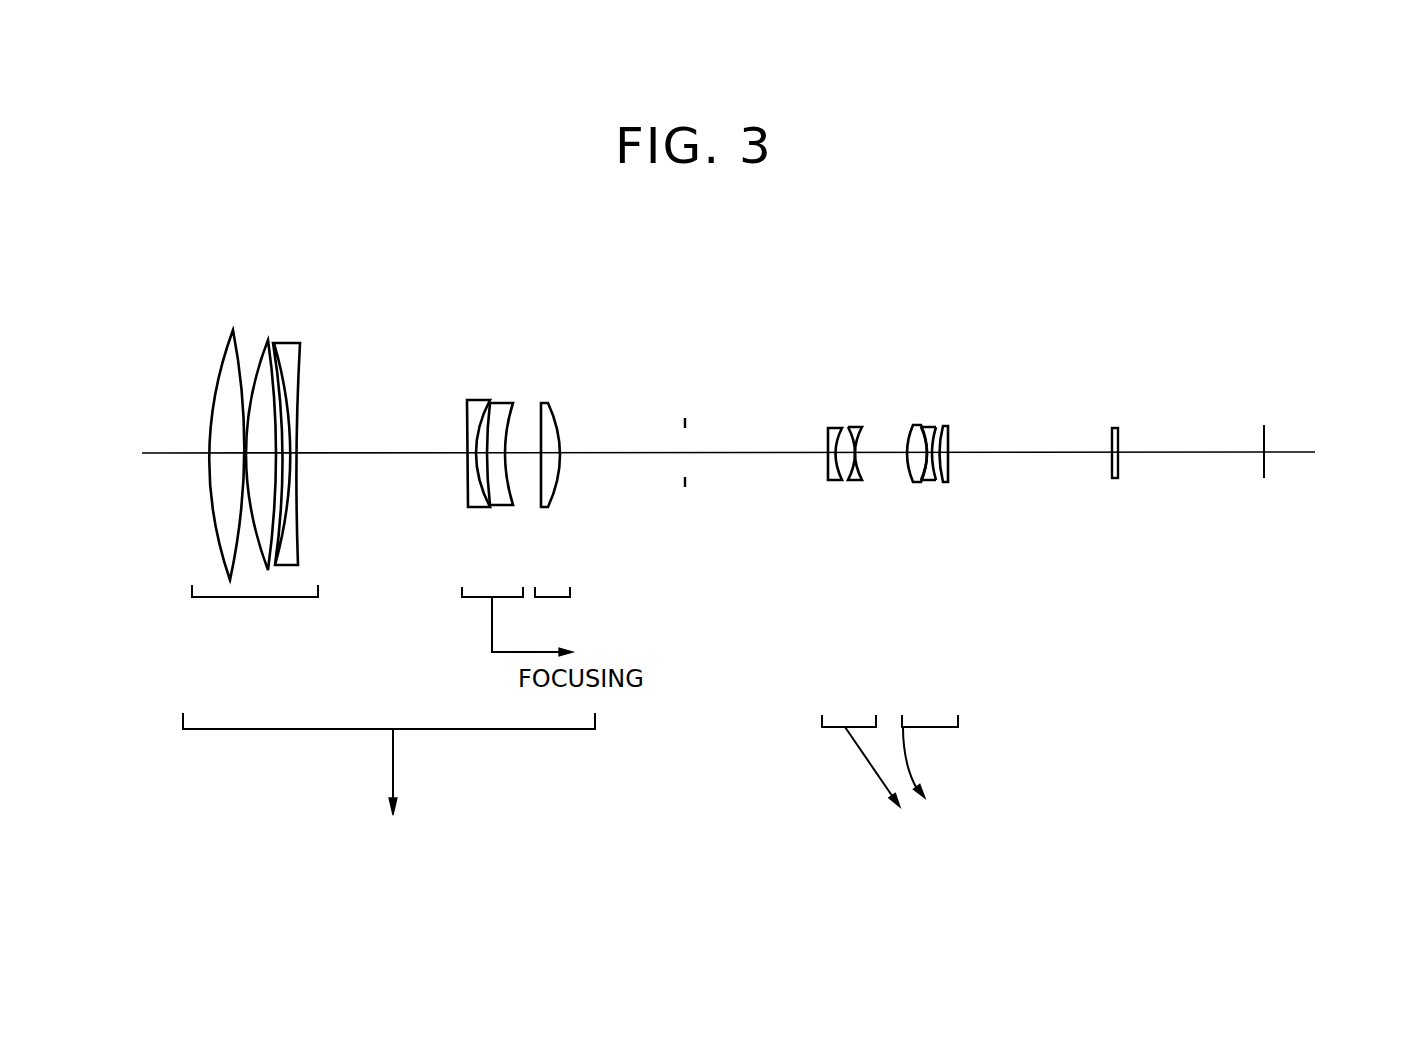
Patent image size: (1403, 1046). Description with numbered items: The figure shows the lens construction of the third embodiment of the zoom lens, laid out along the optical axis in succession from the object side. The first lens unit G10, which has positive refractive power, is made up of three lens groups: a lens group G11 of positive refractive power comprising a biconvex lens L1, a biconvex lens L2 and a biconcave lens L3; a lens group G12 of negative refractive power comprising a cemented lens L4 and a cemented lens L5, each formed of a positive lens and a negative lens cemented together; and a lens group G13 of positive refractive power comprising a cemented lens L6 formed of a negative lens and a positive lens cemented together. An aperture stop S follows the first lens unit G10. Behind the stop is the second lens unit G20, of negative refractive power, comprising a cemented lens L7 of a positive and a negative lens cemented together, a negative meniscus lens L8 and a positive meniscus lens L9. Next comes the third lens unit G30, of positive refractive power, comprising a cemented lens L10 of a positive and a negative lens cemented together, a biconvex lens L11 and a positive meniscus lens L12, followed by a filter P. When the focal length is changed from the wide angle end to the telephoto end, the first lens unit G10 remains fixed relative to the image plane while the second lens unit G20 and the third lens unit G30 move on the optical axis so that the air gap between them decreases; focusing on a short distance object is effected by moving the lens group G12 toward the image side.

The biconvex lens L1 is at (235, 317).
The biconvex lens L2 is at (272, 333).
The biconcave lens L3 is at (292, 330).
The cemented lens L4 is at (487, 357).
The cemented lens L5 is at (520, 357).
The cemented lens L6 is at (562, 357).
The cemented lens L7 is at (845, 410).
The negative meniscus lens L8 is at (847, 427).
The positive meniscus lens L9 is at (857, 427).
The cemented lens L10 is at (930, 410).
The biconvex lens L11 is at (931, 425).
The positive meniscus lens L12 is at (944, 425).
The aperture stop S is at (686, 424).
The filter P is at (1113, 426).
The first lens unit G10 is at (389, 764).
The lens group G11 is at (255, 609).
The lens group G12 is at (482, 610).
The lens group G13 is at (553, 610).
The second lens unit G20 is at (852, 761).
The third lens unit G30 is at (937, 756).